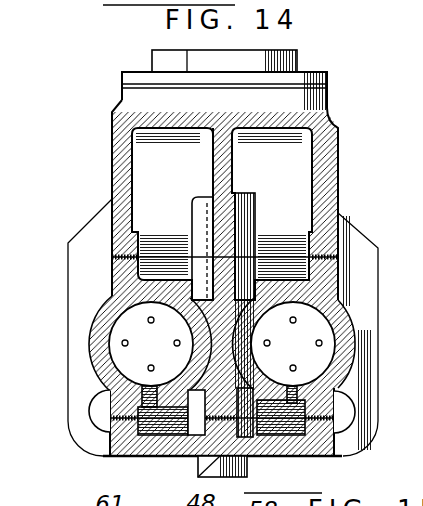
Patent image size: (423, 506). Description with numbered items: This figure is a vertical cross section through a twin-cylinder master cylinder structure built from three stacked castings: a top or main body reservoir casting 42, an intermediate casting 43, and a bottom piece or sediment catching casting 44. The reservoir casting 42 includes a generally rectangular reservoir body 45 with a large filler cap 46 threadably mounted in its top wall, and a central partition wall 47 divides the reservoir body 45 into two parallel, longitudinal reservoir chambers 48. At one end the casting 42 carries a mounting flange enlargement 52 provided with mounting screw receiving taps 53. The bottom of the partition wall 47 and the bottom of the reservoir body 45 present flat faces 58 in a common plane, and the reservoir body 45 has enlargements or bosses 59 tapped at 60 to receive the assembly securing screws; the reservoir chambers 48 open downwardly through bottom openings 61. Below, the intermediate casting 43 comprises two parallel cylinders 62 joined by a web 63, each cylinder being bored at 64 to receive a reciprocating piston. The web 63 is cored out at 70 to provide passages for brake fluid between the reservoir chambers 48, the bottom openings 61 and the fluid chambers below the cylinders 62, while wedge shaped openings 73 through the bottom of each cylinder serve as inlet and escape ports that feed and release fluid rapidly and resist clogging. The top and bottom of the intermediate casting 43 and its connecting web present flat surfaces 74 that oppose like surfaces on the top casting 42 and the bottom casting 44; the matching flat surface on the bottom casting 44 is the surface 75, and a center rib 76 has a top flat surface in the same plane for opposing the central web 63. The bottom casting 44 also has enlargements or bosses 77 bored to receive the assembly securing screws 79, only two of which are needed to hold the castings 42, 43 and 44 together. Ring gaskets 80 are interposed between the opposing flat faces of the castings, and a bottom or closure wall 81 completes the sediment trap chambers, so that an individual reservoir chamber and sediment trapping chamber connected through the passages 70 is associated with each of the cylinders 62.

The top or main body reservoir casting 42 is at (342, 147).
The intermediate casting 43 is at (88, 336).
The bottom piece or sediment catching casting 44 is at (153, 454).
The reservoir body 45 is at (325, 170).
The filler cap 46 is at (167, 55).
The central partition wall 47 is at (213, 172).
The reservoir chambers 48 is at (137, 170).
The mounting flange enlargement 52 is at (370, 318).
The mounting screw receiving taps 53 is at (88, 406).
The flat faces 58 is at (126, 250).
The enlargements or bosses 59 is at (241, 201).
The tapped holes 60 is at (198, 214).
The bottom openings 61 is at (175, 250).
The cylinders 62 is at (112, 305).
The web 63 is at (222, 338).
The bore 64 is at (110, 362).
The cored passages 70 is at (197, 352).
The wedge shaped openings 73 is at (140, 406).
The flat surfaces 74 is at (112, 272).
The matching flat surface 75 is at (352, 452).
The center rib 76 is at (205, 470).
The enlargements or bosses 77 is at (197, 428).
The assembly securing screws 79 is at (249, 470).
The ring gaskets 80 is at (107, 457).
The bottom or closure wall 81 is at (297, 454).